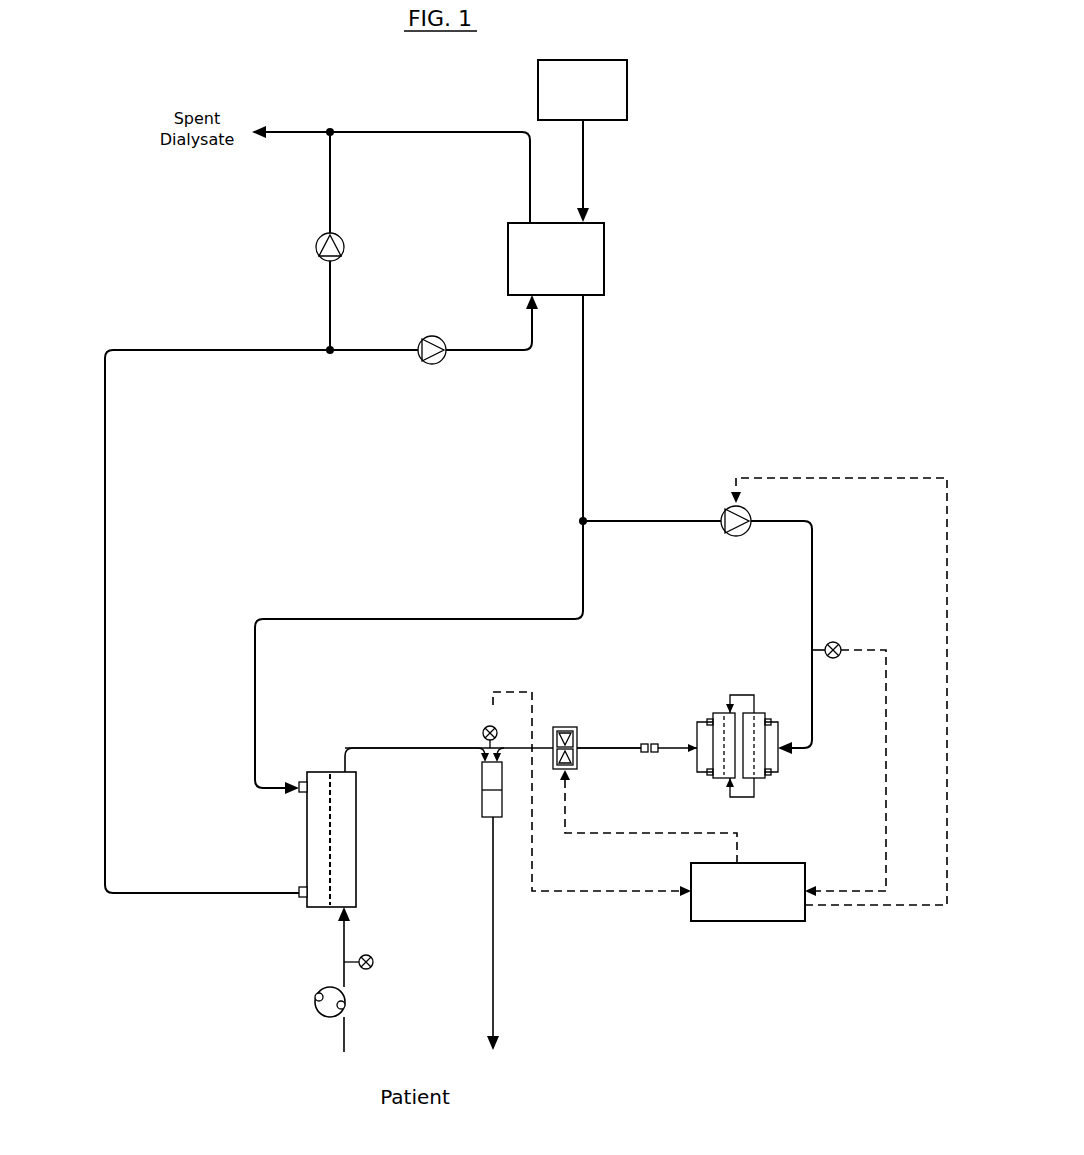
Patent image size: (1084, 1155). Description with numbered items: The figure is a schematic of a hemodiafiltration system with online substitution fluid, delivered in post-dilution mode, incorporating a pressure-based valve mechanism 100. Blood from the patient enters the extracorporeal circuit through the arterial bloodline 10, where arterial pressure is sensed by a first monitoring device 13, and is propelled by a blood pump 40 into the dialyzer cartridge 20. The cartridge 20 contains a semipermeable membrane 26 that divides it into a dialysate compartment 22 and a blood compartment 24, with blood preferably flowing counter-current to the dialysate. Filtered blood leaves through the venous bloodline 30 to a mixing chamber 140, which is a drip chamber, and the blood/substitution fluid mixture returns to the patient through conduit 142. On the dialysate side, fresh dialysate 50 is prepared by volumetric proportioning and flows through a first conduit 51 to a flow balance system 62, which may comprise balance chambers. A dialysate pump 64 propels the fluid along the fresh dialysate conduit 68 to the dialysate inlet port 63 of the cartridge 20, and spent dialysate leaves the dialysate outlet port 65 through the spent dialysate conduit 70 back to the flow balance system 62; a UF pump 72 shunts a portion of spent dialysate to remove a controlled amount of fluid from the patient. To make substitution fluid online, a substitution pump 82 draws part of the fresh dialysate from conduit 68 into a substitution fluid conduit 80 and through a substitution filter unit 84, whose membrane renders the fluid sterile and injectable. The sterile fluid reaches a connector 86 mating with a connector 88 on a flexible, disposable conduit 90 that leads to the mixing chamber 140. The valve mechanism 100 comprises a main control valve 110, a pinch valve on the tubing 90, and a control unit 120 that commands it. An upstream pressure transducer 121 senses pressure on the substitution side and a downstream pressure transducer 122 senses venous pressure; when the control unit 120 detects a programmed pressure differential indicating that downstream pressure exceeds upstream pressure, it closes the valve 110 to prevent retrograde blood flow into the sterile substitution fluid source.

The arterial bloodline 10 is at (343, 936).
The first monitoring device 13 is at (368, 970).
The dialyzer cartridge 20 is at (322, 840).
The dialysate compartment 22 is at (316, 830).
The blood compartment 24 is at (346, 860).
The semipermeable membrane 26 is at (333, 786).
The venous bloodline 30 is at (392, 748).
The blood pump 40 is at (318, 992).
The fresh dialysate 50 is at (628, 88).
The first conduit 51 is at (584, 166).
The flow balance system 62 is at (606, 270).
The dialysate inlet port 63 is at (302, 775).
The dialysate pump 64 is at (440, 362).
The dialysate outlet port 65 is at (299, 905).
The fresh dialysate conduit 68 is at (584, 396).
The spent dialysate conduit 70 is at (104, 780).
The UF pump 72 is at (343, 240).
The substitution fluid conduit 80 is at (662, 520).
The substitution pump 82 is at (720, 534).
The substitution filter unit 84 is at (698, 720).
The connector 86 is at (656, 754).
The connector 88 is at (642, 732).
The conduit 90 is at (586, 750).
The valve mechanism 100 is at (640, 871).
The main control valve 110 is at (566, 726).
The control unit 120 is at (728, 922).
The third monitoring device 121 is at (838, 658).
The second monitoring device 122 is at (483, 728).
The mixing chamber 140 is at (480, 804).
The conduit 142 is at (494, 934).